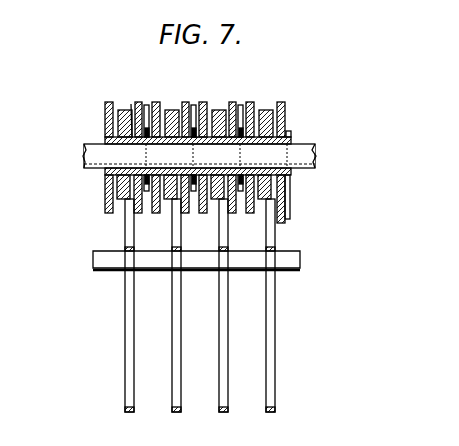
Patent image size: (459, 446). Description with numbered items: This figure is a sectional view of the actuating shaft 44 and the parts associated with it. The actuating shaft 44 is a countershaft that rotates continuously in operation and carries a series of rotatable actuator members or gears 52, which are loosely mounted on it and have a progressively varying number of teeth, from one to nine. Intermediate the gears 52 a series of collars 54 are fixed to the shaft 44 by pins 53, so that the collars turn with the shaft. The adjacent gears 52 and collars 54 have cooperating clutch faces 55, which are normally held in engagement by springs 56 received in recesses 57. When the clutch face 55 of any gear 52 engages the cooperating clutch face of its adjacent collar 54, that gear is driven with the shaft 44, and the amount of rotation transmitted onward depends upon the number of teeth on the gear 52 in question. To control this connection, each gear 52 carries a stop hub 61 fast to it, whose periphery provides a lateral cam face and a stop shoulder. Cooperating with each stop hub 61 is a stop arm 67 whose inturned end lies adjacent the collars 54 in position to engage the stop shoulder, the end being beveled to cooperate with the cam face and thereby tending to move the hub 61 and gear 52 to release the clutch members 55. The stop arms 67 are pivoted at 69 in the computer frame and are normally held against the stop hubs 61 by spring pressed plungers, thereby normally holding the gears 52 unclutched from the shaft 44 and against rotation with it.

The actuating shaft 44 is at (85, 148).
The actuator gears 52 is at (157, 103).
The pins 53 is at (198, 103).
The collars 54 is at (236, 104).
The clutch faces 55 is at (122, 105).
The springs 56 is at (241, 134).
The recesses 57 is at (107, 136).
The stop hub 61 is at (132, 104).
The stop arm 67 is at (127, 327).
The pivot 69 is at (103, 258).